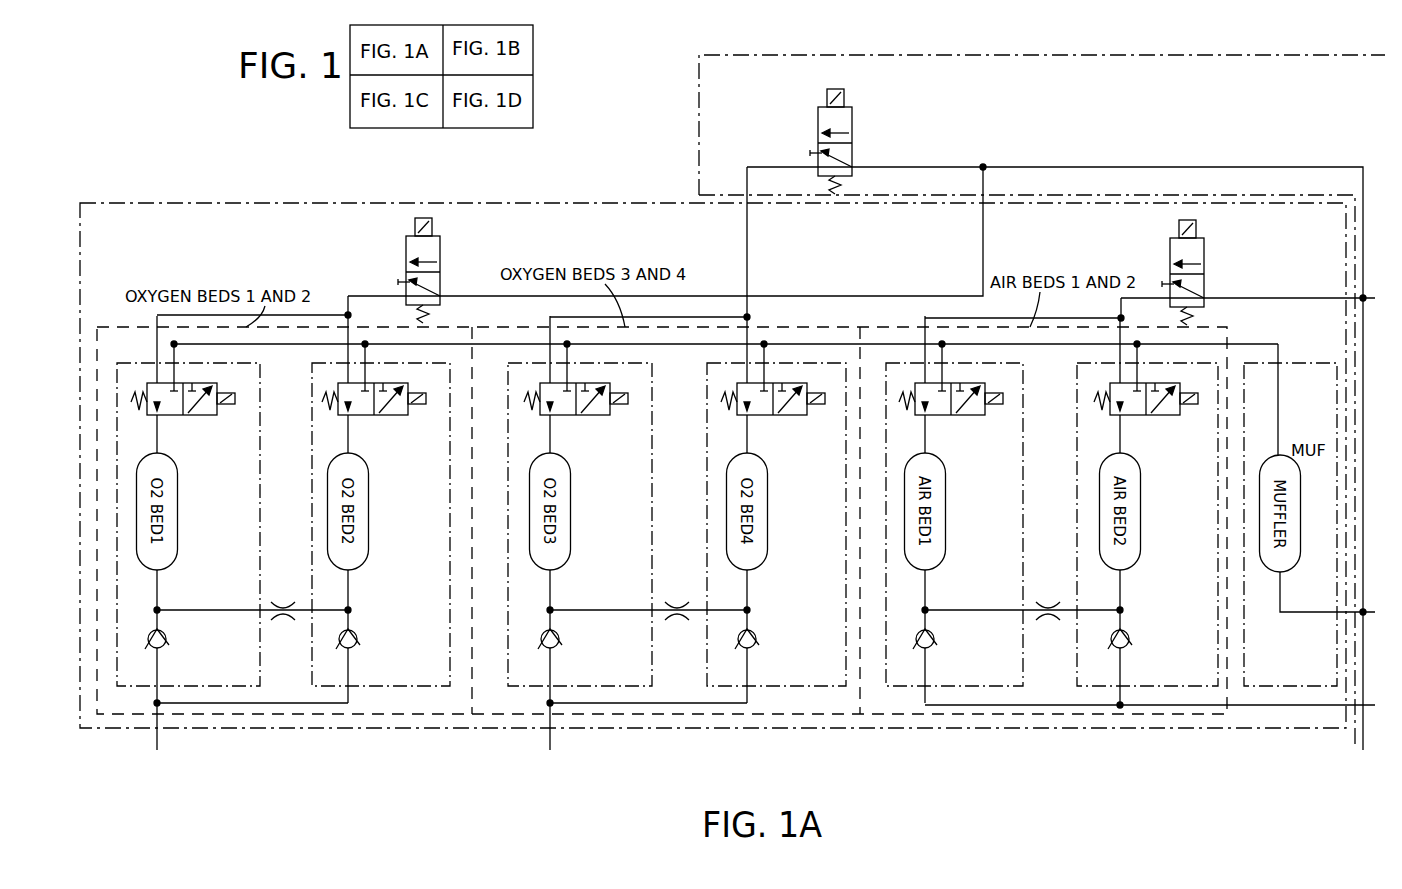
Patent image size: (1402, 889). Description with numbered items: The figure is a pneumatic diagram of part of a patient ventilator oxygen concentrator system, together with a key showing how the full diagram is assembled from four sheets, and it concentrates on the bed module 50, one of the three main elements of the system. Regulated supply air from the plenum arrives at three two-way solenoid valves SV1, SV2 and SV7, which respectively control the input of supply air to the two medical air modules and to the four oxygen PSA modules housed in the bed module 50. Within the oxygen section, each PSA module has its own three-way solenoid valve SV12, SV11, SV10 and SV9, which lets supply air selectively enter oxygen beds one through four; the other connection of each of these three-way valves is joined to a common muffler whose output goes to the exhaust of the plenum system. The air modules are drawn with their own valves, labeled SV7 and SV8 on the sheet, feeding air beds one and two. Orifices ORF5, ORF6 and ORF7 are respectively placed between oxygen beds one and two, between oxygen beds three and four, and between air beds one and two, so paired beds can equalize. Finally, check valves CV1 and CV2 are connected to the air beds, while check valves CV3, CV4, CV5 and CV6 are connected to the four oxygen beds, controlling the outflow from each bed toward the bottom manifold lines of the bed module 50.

The bed module 50 is at (278, 221).
The three-way solenoid valve SV12 is at (191, 390).
The three-way solenoid valve SV11 is at (382, 390).
The three-way solenoid valve SV10 is at (584, 390).
The three-way solenoid valve SV9 is at (781, 390).
The two-way solenoid valve SV7 is at (913, 252).
The solenoid valve AIR-2 SV8 is at (1153, 390).
The two-way solenoid valve SV2 is at (409, 270).
The two-way solenoid valve SV1 is at (1172, 271).
The check valve CV1 is at (943, 637).
The check valve CV2 is at (1138, 637).
The check valve CV3 is at (175, 637).
The check valve CV4 is at (366, 637).
The check valve CV5 is at (568, 637).
The check valve CV6 is at (765, 637).
The orifice ORF5 is at (284, 600).
The orifice ORF6 is at (678, 600).
The orifice ORF7 is at (1049, 600).